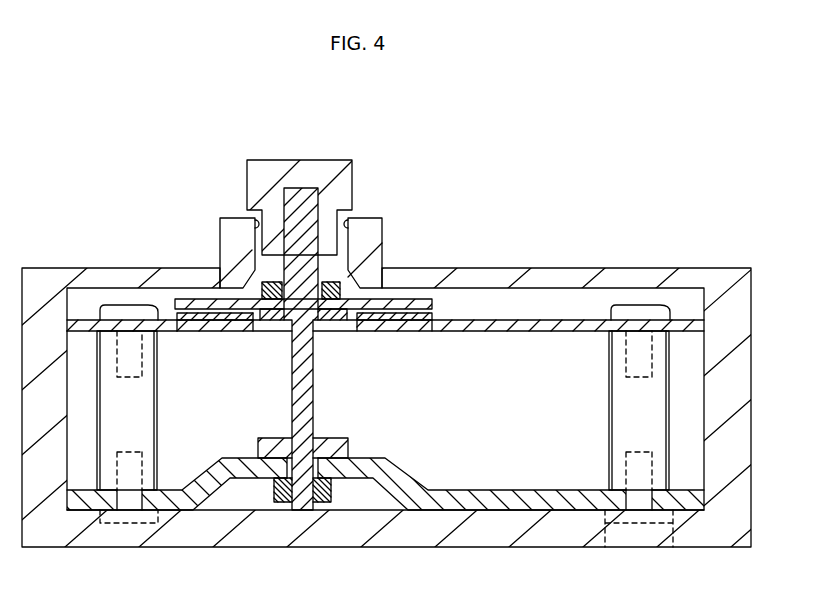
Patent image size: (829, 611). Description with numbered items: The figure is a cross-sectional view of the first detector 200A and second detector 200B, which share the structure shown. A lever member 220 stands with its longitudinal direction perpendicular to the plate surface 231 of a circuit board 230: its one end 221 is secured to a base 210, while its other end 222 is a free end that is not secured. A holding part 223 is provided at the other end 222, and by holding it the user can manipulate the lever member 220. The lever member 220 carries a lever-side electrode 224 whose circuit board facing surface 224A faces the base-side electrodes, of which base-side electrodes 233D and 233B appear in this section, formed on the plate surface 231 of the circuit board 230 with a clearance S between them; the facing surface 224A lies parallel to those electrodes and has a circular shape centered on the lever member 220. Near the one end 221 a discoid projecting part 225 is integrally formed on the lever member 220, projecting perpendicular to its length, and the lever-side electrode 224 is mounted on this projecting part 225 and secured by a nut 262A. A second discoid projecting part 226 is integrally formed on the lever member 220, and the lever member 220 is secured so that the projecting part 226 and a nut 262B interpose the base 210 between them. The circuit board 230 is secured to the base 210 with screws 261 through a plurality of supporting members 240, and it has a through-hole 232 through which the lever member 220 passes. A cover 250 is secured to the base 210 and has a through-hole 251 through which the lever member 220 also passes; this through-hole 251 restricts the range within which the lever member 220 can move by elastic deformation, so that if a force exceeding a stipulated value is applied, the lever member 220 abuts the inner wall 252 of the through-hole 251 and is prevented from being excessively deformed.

The first detector 200A is at (660, 190).
The second detector 200B is at (414, 349).
The cover 250 is at (457, 270).
The through-hole 251 is at (254, 216).
The inner wall 252 is at (348, 214).
The holding part 223 is at (325, 170).
The other end 222 is at (297, 187).
The lever member 220 is at (315, 410).
The one end 221 is at (302, 492).
The nut 262A is at (265, 283).
The lever-side electrode 224 is at (405, 299).
The circuit board facing surface 224A is at (233, 321).
The through-hole 232 is at (264, 321).
The projecting part 225 is at (331, 321).
The base-side electrode 233D is at (194, 322).
The base-side electrode 233B is at (396, 321).
The clearance S is at (433, 312).
The circuit board 230 is at (547, 333).
The plate surface 231 is at (520, 320).
The screw 261 is at (128, 306).
The supporting member 240 is at (143, 398).
The base 210 is at (480, 496).
The projecting part 226 is at (349, 451).
The nut 262B is at (328, 482).